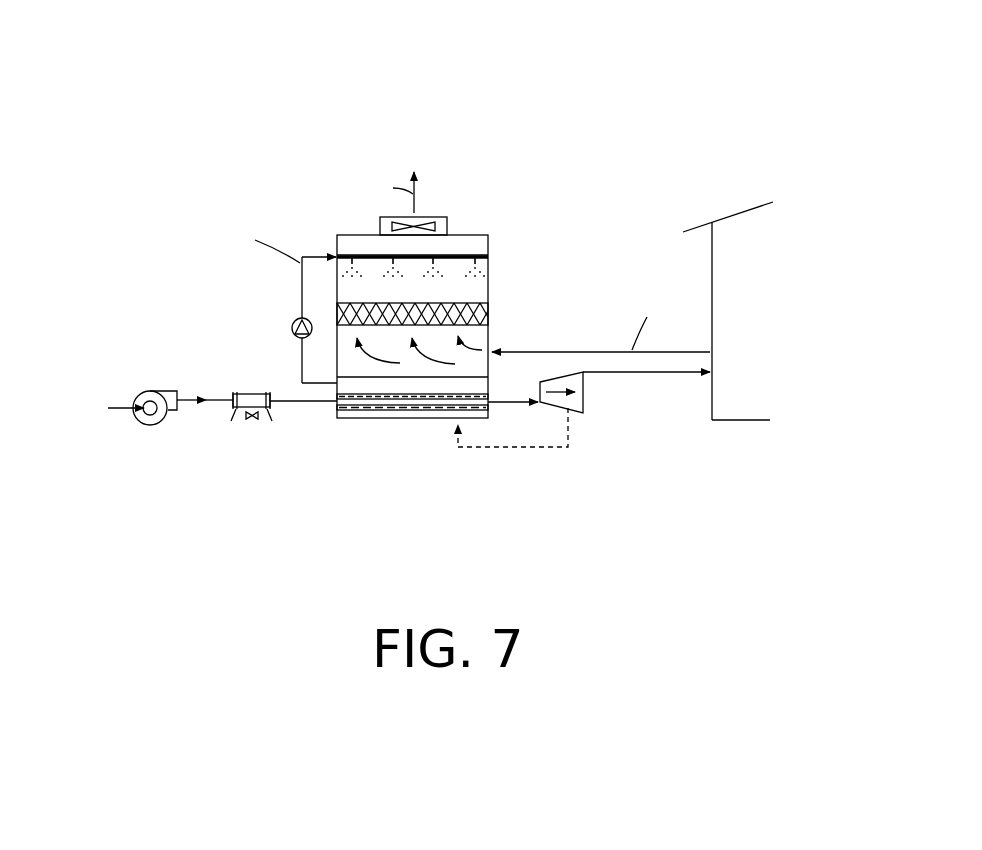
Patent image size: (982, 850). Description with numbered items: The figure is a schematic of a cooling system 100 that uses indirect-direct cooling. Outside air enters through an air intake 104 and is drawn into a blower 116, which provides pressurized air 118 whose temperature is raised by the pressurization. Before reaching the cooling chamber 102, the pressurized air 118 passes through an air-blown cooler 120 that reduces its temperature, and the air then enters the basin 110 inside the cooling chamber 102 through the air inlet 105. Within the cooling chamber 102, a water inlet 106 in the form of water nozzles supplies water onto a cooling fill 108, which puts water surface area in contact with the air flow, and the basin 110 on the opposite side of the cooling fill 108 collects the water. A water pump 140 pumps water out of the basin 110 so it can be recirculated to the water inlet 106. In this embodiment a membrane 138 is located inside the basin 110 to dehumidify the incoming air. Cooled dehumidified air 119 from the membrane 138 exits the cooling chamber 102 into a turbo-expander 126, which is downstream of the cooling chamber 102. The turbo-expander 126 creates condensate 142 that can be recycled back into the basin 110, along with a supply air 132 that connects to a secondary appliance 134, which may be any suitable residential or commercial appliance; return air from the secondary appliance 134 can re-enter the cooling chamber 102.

The cooling system 100 is at (412, 92).
The cooling chamber 102 is at (470, 235).
The air intake 104 is at (112, 410).
The air inlet 105 is at (315, 403).
The water inlet 106 is at (488, 268).
The cooling fill 108 is at (488, 318).
The basin 110 is at (417, 413).
The blower 116 is at (136, 390).
The pressurized air 118 is at (192, 405).
The cooled dehumidified air 119 is at (510, 404).
The air-blown cooler 120 is at (252, 393).
The turbo-expander 126 is at (583, 413).
The supply air 132 is at (668, 373).
The secondary appliance 134 is at (712, 312).
The membrane 138 is at (362, 407).
The water pump 140 is at (293, 318).
The condensate 142 is at (475, 448).